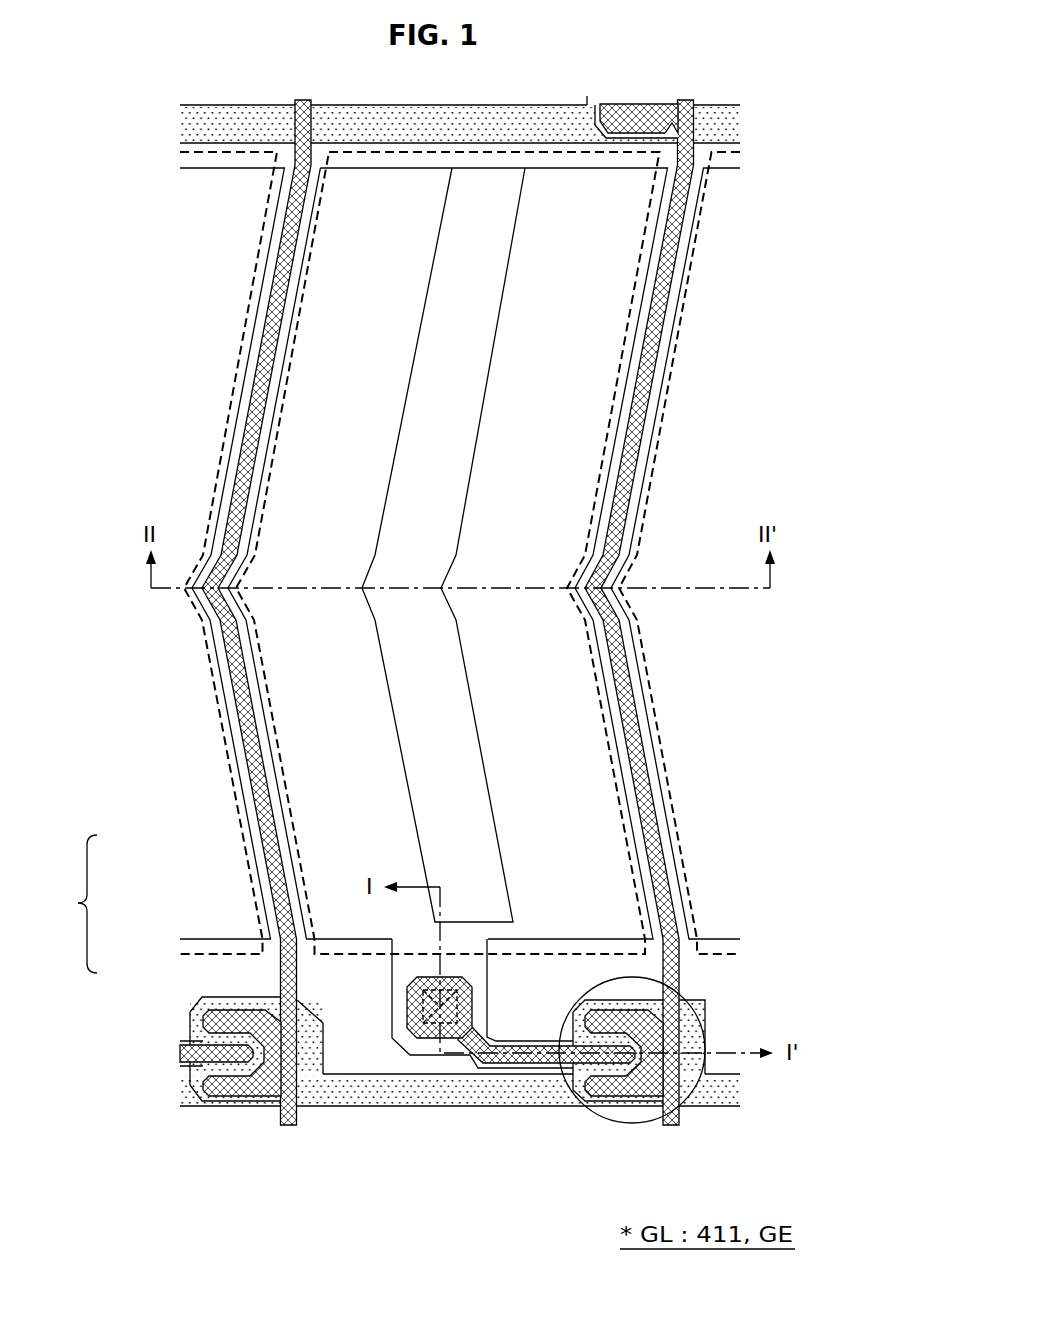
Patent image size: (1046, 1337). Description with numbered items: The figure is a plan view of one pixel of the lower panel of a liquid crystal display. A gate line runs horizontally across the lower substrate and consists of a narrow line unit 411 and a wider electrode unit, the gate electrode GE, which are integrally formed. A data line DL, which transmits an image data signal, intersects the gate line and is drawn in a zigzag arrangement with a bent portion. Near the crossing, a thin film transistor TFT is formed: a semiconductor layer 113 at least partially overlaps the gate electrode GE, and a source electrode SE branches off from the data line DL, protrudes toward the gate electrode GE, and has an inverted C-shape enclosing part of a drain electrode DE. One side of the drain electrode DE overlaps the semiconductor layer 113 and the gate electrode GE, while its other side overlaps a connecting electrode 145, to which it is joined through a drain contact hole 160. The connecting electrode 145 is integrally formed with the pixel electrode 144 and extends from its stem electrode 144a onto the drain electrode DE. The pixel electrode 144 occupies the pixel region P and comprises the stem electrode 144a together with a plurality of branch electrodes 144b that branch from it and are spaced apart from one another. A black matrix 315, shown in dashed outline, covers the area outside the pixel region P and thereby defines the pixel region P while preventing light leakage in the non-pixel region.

The line unit 411 is at (339, 1088).
The gate electrode GE is at (638, 1000).
The branch electrodes 144b is at (345, 831).
The stem electrode 144a is at (467, 930).
The pixel electrode 144 is at (67, 904).
The pixel region P is at (455, 364).
The black matrix 315 is at (245, 661).
The data line DL is at (633, 675).
The semiconductor layer 113 is at (606, 1072).
The source electrode SE is at (640, 1088).
The drain electrode DE is at (511, 1064).
The connecting electrode 145 is at (404, 1013).
The drain contact hole 160 is at (433, 1040).
The thin film transistor TFT is at (700, 1003).